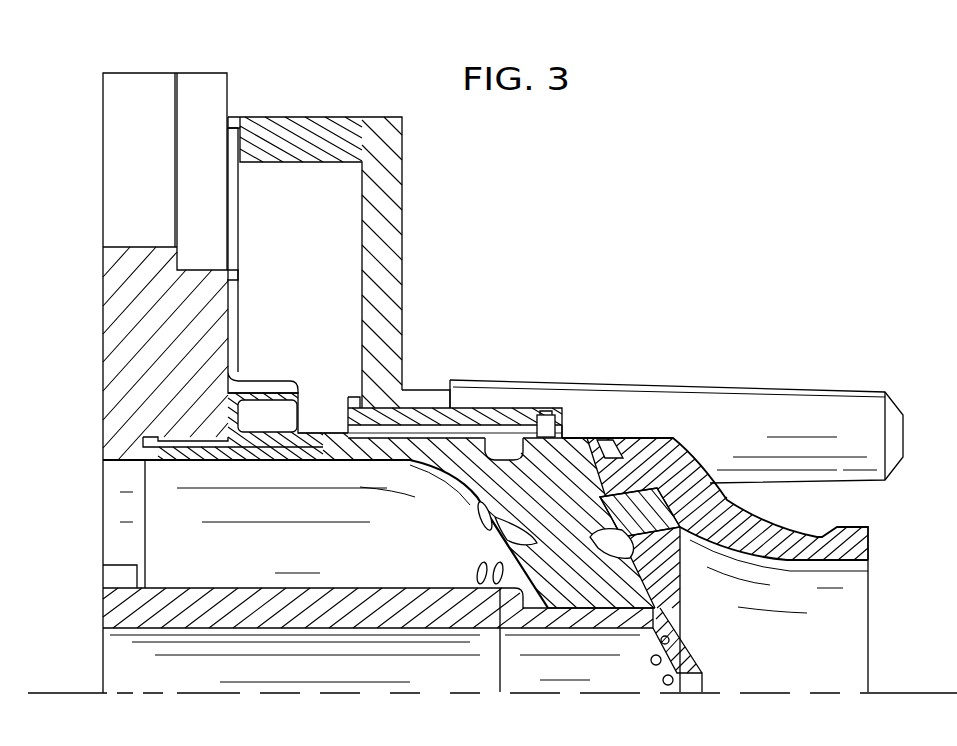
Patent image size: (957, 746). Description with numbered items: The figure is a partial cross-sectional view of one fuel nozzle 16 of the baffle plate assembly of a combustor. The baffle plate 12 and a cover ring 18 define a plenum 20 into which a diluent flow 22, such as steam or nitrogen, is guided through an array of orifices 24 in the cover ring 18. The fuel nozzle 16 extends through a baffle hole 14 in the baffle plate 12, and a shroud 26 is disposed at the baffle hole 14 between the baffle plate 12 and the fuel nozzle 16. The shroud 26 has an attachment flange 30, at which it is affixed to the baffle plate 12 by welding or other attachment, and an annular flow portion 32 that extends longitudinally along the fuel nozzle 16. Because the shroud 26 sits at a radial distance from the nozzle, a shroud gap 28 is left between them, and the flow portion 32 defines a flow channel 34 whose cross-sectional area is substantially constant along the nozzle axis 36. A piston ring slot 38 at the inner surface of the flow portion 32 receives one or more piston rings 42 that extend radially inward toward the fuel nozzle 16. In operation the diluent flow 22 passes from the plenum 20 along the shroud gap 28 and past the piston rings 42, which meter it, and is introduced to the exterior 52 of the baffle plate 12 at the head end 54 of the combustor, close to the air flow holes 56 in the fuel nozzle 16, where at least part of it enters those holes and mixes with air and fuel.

The baffle plate 12 is at (395, 178).
The baffle hole 14 is at (405, 398).
The fuel nozzle 16 is at (777, 673).
The cover ring 18 is at (237, 192).
The plenum 20 is at (290, 203).
The diluent flow 22 is at (297, 275).
The orifices 24 is at (228, 288).
The shroud 26 is at (473, 418).
The shroud gap 28 is at (327, 487).
The attachment flange 30 is at (352, 400).
The flow portion 32 is at (527, 400).
The flow channel 34 is at (400, 433).
The nozzle axis 36 is at (72, 695).
The piston ring slot 38 is at (603, 455).
The piston ring 42 is at (545, 415).
The exterior 52 is at (703, 285).
The head end 54 is at (890, 352).
The air flow holes 56 is at (612, 447).